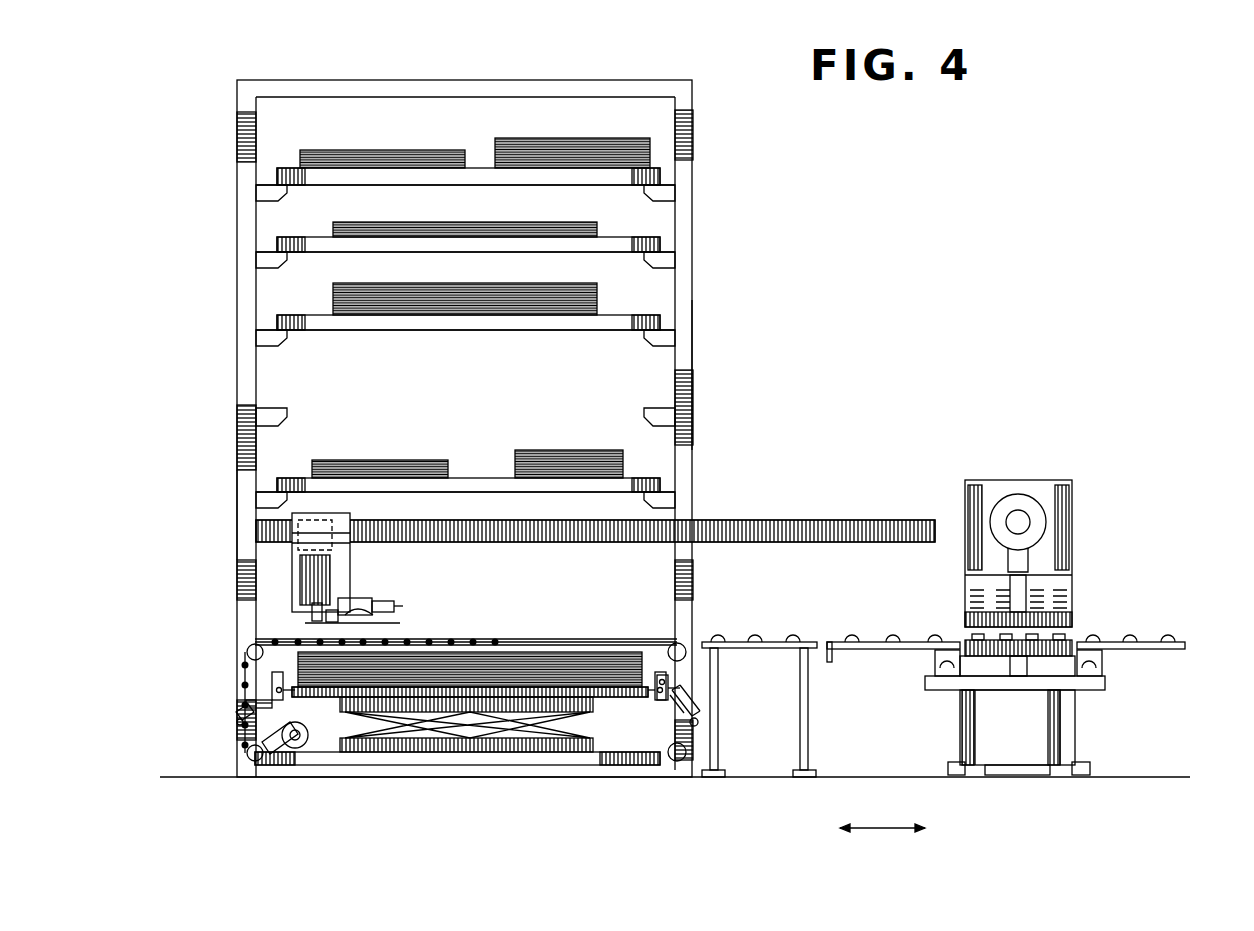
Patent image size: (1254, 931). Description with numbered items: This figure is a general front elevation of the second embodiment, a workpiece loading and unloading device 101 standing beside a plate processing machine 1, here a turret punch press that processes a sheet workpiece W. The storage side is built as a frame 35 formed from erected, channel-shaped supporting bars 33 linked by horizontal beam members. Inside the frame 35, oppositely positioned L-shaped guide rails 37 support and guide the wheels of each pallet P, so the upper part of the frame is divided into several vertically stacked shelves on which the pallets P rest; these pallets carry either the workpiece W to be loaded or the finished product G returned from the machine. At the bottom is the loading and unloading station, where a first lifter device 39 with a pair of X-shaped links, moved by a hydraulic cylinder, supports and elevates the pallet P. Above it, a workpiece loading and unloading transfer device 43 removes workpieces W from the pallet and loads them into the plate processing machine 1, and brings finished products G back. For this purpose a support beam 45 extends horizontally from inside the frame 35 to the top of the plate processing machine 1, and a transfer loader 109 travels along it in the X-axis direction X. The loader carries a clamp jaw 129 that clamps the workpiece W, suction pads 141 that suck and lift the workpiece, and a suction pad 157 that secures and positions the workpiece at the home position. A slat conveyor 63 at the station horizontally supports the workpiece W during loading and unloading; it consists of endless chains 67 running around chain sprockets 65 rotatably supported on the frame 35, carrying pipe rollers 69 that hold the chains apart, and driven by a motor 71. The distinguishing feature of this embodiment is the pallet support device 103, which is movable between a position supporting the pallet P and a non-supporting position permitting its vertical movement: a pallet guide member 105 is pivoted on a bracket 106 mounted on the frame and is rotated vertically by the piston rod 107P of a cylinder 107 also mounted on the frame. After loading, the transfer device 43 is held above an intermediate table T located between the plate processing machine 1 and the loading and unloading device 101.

The plate processing machine 1 is at (1096, 608).
The supporting bars 33 is at (245, 378).
The frame 35 is at (235, 478).
The guide rails 37 is at (668, 260).
The first lifter device 39 is at (440, 745).
The workpiece loading and unloading transfer device 43 is at (290, 572).
The support beam 45 is at (782, 519).
The slat conveyor 63 is at (447, 638).
The chain sprockets 65 is at (247, 654).
The endless chains 67 is at (500, 765).
The pipe rollers 69 is at (477, 637).
The motor 71 is at (300, 750).
The workpiece loading and unloading device 101 is at (694, 376).
The pallet support device 103 is at (228, 690).
The pallet guide member 105 is at (663, 702).
The bracket 106 is at (252, 743).
The cylinder 107 is at (243, 715).
The piston rod 107P is at (689, 688).
The transfer loader 109 is at (295, 580).
The clamp jaw 129 is at (307, 634).
The suction pads 141 is at (350, 607).
The suction pad 157 is at (399, 626).
The finished product G is at (487, 223).
The pallet P is at (285, 188).
The workpiece W is at (563, 660).
The intermediate table T is at (775, 640).
The X-axis direction X is at (897, 830).